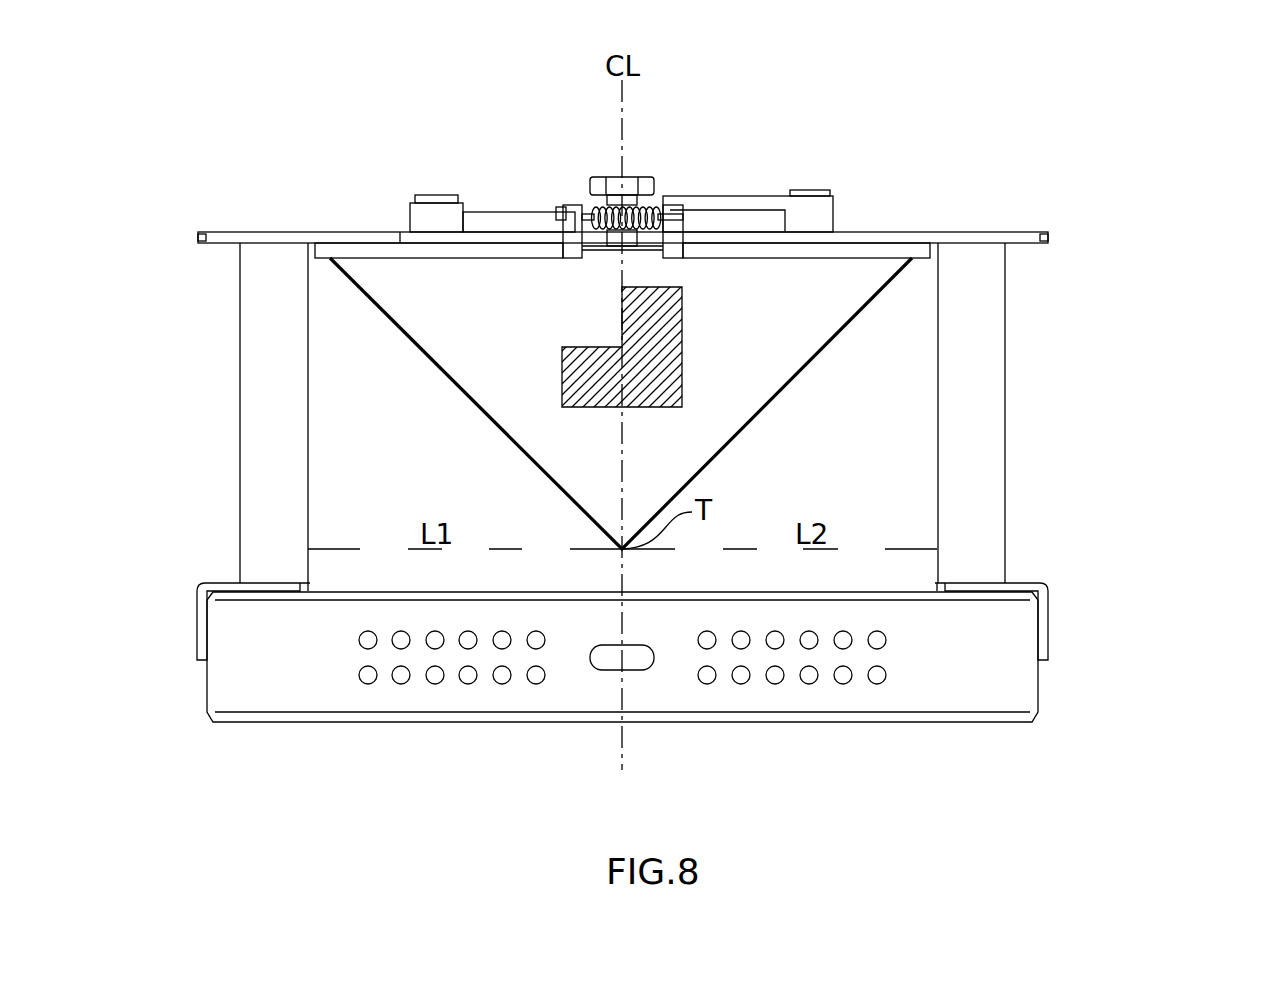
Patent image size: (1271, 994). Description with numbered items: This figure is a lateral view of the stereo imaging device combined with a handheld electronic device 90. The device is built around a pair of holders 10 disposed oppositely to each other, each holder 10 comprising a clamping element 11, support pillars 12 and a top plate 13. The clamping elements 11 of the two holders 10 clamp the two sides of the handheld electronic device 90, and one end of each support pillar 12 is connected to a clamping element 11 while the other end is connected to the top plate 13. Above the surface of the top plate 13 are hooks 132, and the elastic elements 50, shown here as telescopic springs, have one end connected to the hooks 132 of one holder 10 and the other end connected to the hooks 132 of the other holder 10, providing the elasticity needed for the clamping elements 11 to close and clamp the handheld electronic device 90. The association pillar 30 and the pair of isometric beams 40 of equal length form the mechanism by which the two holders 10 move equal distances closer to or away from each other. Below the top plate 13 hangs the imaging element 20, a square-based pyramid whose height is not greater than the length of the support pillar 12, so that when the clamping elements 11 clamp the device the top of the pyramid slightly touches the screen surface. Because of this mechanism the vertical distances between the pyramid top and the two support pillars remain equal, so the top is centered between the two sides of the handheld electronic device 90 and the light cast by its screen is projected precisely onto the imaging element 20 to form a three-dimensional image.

The holder 10 is at (1132, 244).
The clamping element 11 is at (197, 628).
The support pillar 12 is at (243, 519).
The top plate 13 is at (198, 240).
The imaging element 20 is at (543, 407).
The association pillar 30 is at (633, 178).
The isometric beam 40 is at (801, 196).
The elastic element 50 is at (586, 207).
The handheld electronic device 90 is at (1030, 690).
The hook 132 is at (573, 207).